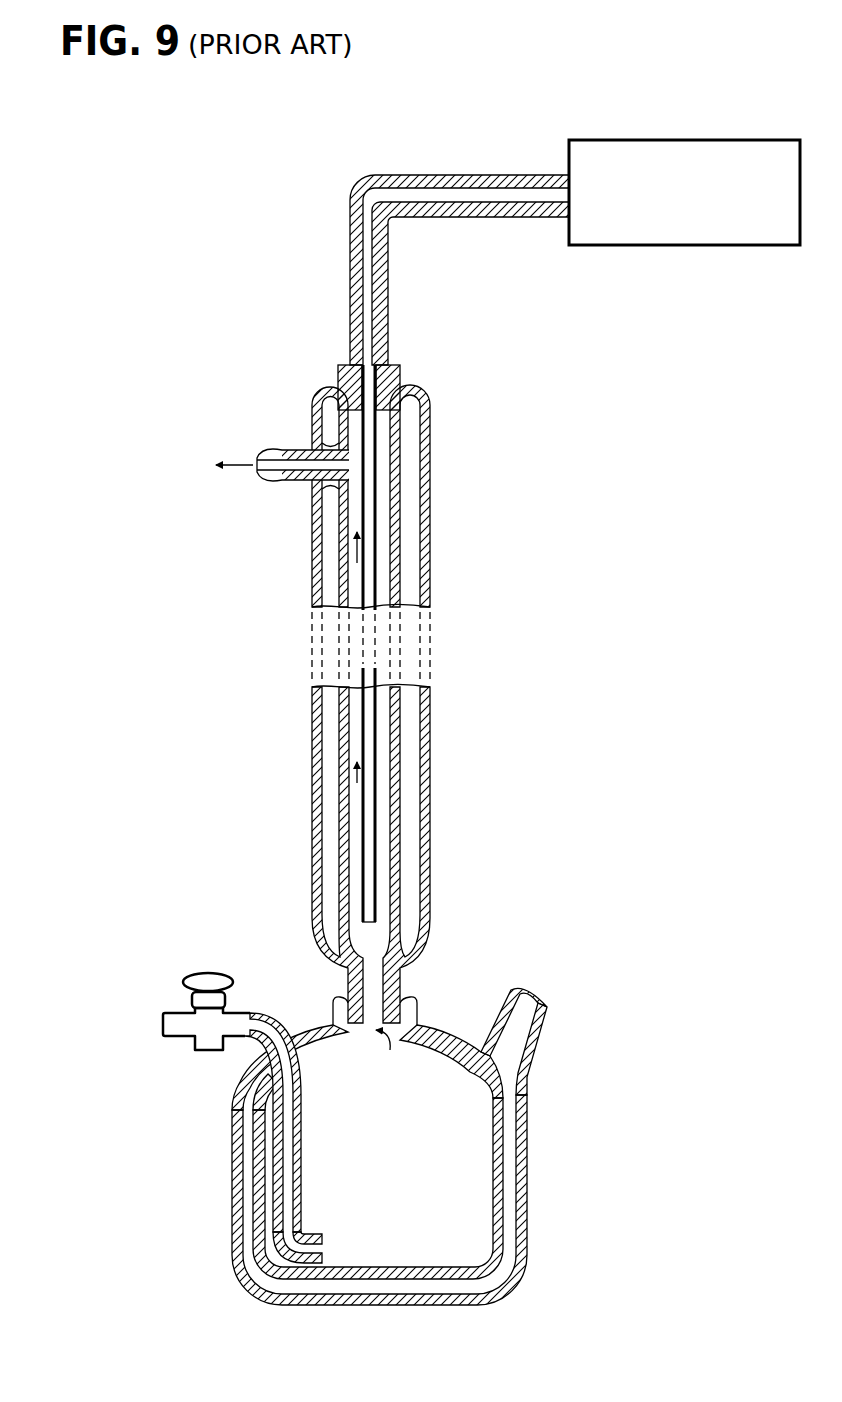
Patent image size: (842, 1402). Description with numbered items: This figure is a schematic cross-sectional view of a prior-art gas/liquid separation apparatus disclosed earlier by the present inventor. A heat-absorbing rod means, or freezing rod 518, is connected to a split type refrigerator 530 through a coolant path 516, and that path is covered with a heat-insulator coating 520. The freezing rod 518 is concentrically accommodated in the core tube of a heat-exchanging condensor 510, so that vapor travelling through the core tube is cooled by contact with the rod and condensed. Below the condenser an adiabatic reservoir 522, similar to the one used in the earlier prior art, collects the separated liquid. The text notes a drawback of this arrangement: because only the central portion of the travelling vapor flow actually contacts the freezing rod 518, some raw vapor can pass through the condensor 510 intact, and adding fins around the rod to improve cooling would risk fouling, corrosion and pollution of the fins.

The heat-exchanging condensor 510 is at (427, 582).
The coolant path 516 is at (482, 194).
The heat-absorbing rod means (freezing rod) 518 is at (370, 490).
The heat-insulator coating 520 is at (363, 192).
The adiabatic reservoir 522 is at (528, 1152).
The split type refrigerator 530 is at (633, 150).